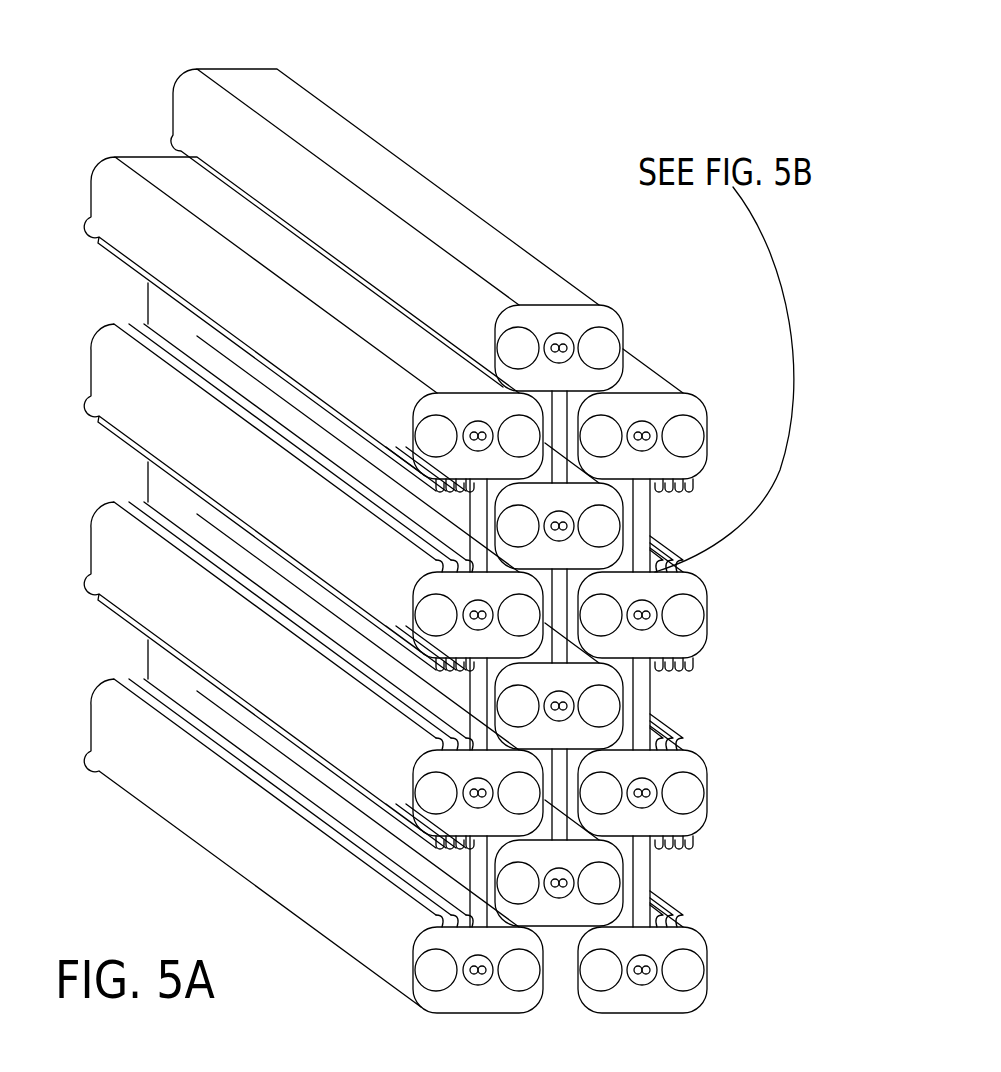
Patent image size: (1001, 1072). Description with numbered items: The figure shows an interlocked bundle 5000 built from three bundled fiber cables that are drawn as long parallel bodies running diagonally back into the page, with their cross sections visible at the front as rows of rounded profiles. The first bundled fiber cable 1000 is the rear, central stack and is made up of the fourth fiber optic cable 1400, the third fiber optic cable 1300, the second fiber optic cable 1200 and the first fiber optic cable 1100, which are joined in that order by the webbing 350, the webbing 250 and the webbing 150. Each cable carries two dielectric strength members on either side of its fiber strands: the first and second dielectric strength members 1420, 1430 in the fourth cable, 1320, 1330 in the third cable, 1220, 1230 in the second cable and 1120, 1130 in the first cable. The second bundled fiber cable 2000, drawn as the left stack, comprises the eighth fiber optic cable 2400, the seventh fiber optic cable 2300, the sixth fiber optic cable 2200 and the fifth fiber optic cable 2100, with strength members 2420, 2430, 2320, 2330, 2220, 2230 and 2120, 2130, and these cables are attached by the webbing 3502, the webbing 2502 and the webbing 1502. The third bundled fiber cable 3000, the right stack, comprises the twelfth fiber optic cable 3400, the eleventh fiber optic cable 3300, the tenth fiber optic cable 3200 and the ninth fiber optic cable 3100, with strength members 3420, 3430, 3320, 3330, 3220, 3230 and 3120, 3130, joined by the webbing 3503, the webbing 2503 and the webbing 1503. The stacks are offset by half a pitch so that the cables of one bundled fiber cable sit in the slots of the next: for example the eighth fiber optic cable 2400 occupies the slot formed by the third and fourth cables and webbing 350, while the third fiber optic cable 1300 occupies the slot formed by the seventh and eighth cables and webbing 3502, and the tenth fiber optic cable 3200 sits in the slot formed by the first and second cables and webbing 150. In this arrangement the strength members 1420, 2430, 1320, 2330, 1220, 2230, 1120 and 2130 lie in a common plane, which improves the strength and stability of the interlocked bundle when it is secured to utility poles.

The interlocked bundle 5000 is at (548, 170).
The first bundled fiber cable 1000 is at (350, 118).
The second bundled fiber cable 2000 is at (197, 157).
The third bundled fiber cable 3000 is at (665, 375).
The fourth fiber optic cable 1400 is at (559, 348).
The first dielectric strength member 1420 is at (518, 348).
The second dielectric strength member 1430 is at (599, 348).
The third fiber optic cable 1300 is at (559, 526).
The first dielectric strength member 1320 is at (518, 526).
The second dielectric strength member 1330 is at (599, 526).
The second fiber optic cable 1200 is at (559, 706).
The first dielectric strength member 1220 is at (518, 706).
The second dielectric strength member 1230 is at (599, 706).
The first fiber optic cable 1100 is at (559, 883).
The first dielectric strength member 1120 is at (518, 883).
The second dielectric strength member 1130 is at (599, 883).
The eighth fiber optic cable 2400 is at (478, 436).
The first dielectric strength member 2420 is at (436, 436).
The second dielectric strength member 2430 is at (519, 436).
The seventh fiber optic cable 2300 is at (478, 615).
The first dielectric strength member 2320 is at (436, 615).
The second dielectric strength member 2330 is at (519, 615).
The sixth fiber optic cable 2200 is at (478, 793).
The first dielectric strength member 2220 is at (436, 793).
The second dielectric strength member 2230 is at (519, 793).
The fifth fiber optic cable 2100 is at (478, 970).
The first dielectric strength member 2120 is at (436, 970).
The second dielectric strength member 2130 is at (519, 970).
The twelfth fiber optic cable 3400 is at (642, 436).
The first dielectric strength member 3420 is at (601, 436).
The second dielectric strength member 3430 is at (683, 436).
The eleventh fiber optic cable 3300 is at (642, 615).
The first dielectric strength member 3320 is at (601, 615).
The second dielectric strength member 3330 is at (683, 615).
The tenth fiber optic cable 3200 is at (642, 793).
The first dielectric strength member 3220 is at (601, 793).
The second dielectric strength member 3230 is at (683, 793).
The ninth fiber optic cable 3100 is at (642, 970).
The first dielectric strength member 3120 is at (601, 970).
The second dielectric strength member 3130 is at (683, 970).
The webbing 350 is at (558, 437).
The webbing 3502 is at (148, 300).
The webbing 3503 is at (652, 524).
The webbing 250 is at (560, 597).
The webbing 2502 is at (148, 487).
The webbing 2503 is at (640, 704).
The webbing 150 is at (558, 797).
The webbing 1502 is at (148, 658).
The webbing 1503 is at (640, 880).